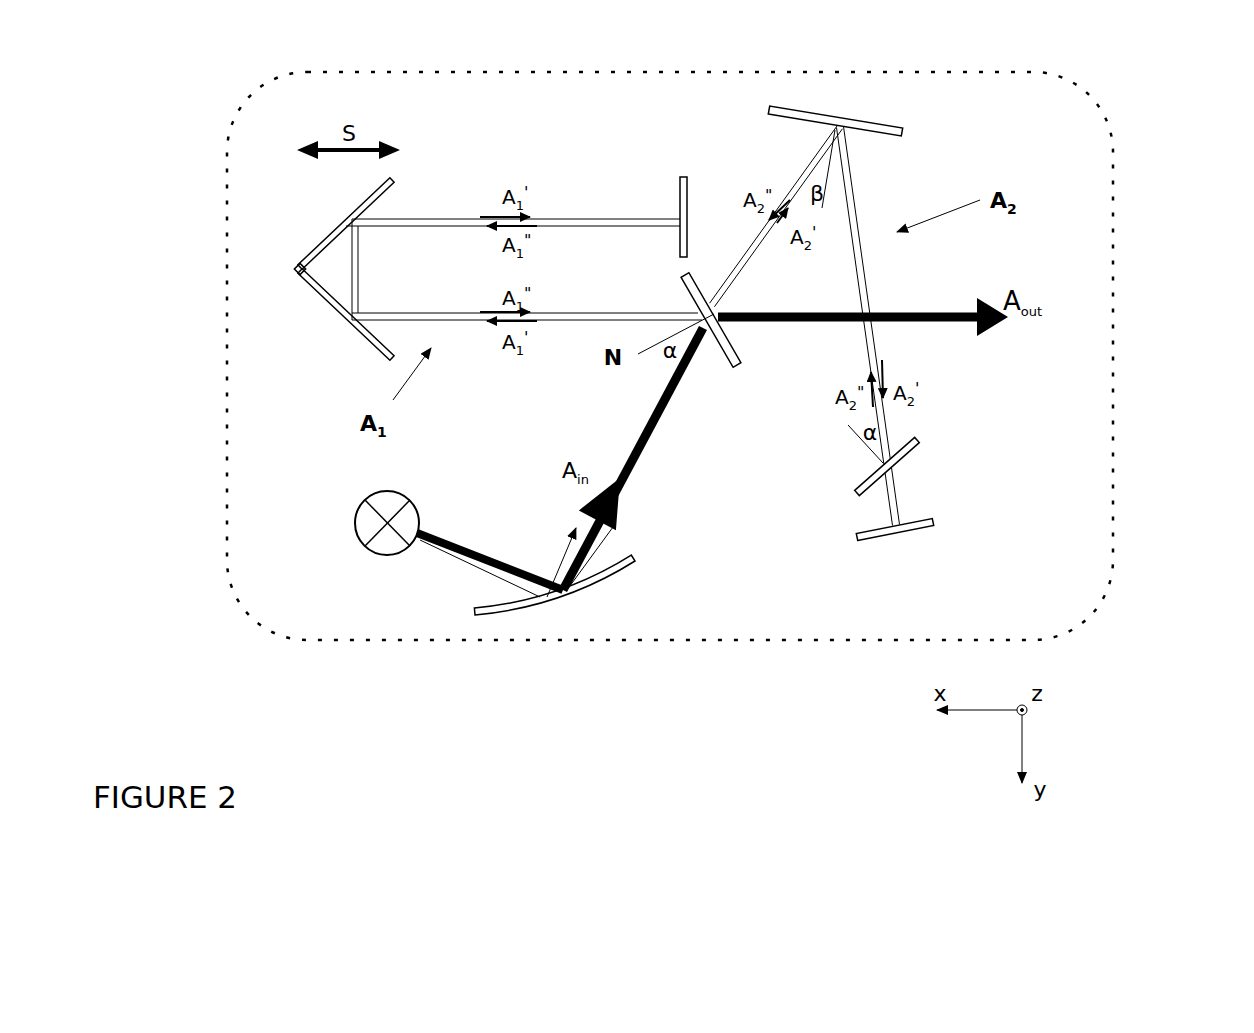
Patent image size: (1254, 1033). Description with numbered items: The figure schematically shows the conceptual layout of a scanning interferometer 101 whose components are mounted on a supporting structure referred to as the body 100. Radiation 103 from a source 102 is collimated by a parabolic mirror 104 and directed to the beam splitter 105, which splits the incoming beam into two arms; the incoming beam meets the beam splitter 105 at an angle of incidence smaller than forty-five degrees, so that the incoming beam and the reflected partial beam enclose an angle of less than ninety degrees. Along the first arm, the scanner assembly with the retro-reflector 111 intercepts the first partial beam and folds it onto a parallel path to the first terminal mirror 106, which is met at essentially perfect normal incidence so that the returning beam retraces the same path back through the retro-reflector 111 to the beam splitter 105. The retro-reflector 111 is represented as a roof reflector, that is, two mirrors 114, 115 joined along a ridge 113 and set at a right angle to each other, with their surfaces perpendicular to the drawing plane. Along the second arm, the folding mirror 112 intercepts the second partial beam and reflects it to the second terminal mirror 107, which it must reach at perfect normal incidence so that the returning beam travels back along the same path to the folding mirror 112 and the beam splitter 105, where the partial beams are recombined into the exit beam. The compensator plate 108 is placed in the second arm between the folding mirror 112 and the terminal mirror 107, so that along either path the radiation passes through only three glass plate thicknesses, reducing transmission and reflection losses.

The body 100 is at (1052, 504).
The scanning interferometer 101 is at (1122, 111).
The source 102 is at (365, 518).
The radiation 103 is at (487, 557).
The parabolic mirror 104 is at (610, 578).
The beam splitter 105 is at (733, 369).
The first terminal mirror 106 is at (680, 178).
The second terminal mirror 107 is at (917, 535).
The compensator plate 108 is at (918, 445).
The retro-reflector 111 is at (267, 269).
The folding mirror 112 is at (813, 113).
The ridge 113 is at (296, 270).
The mirror 114 is at (333, 307).
The mirror 115 is at (325, 242).